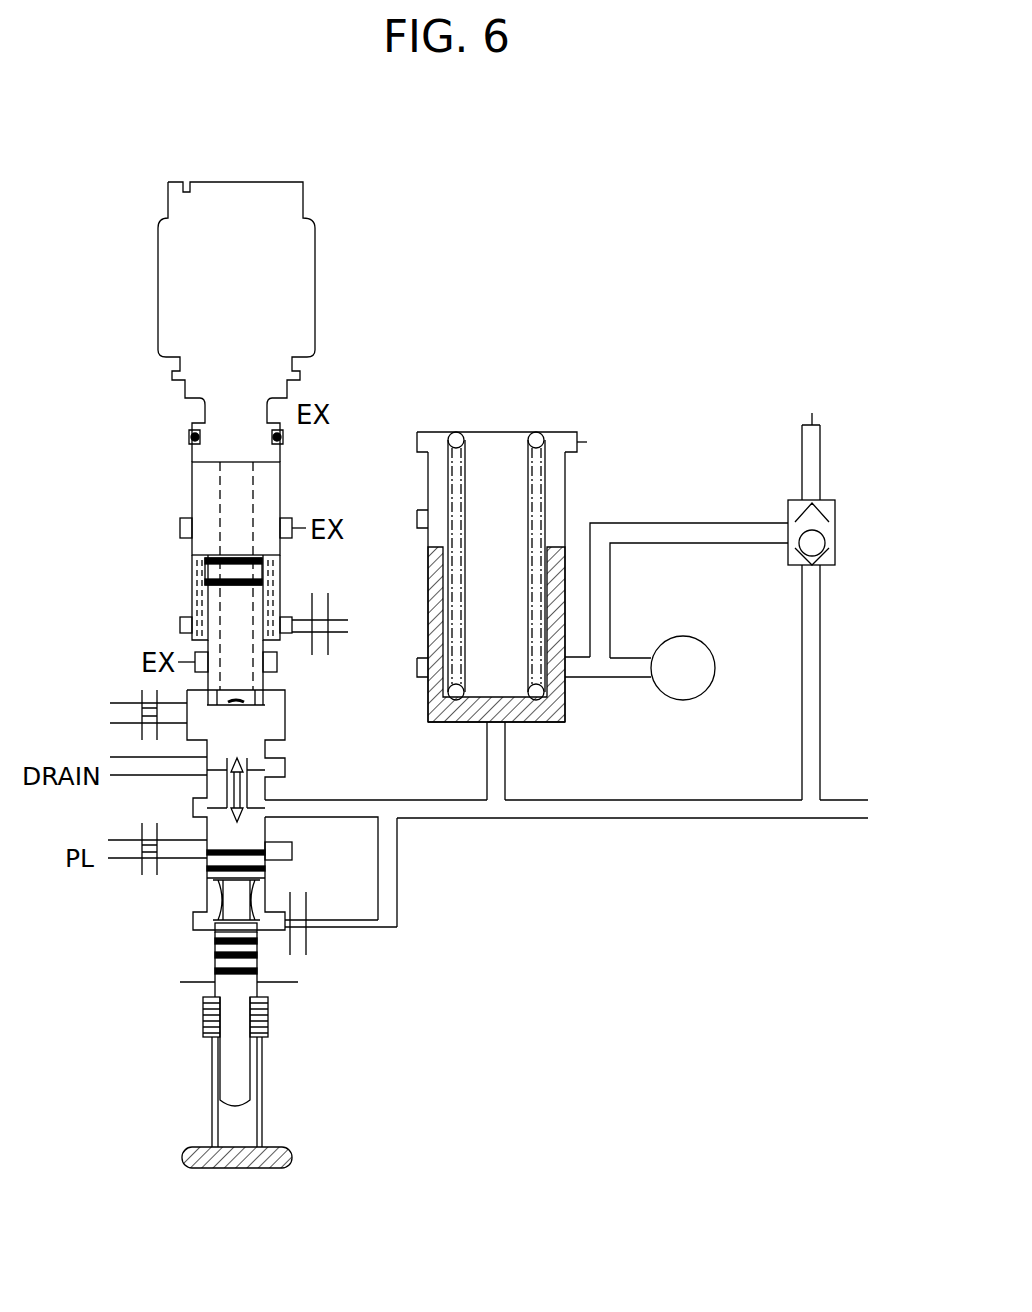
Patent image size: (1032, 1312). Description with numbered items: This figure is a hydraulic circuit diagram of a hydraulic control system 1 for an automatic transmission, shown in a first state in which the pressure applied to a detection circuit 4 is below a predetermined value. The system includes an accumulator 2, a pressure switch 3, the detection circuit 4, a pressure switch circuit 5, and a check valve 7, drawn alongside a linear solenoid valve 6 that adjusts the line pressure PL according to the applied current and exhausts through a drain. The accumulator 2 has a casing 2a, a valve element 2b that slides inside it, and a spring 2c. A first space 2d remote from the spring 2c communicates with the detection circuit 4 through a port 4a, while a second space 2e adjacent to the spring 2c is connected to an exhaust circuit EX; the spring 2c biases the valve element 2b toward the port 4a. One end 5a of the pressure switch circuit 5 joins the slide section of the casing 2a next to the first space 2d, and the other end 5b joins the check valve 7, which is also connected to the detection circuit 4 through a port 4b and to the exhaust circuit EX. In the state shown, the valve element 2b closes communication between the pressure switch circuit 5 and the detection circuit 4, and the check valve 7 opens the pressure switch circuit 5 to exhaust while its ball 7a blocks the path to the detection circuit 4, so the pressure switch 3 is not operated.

The hydraulic control system 1 is at (562, 151).
The accumulator 2 is at (499, 430).
The casing 2a is at (428, 470).
The valve element 2b is at (433, 703).
The spring 2c is at (565, 470).
The first space 2d is at (437, 728).
The second space 2e is at (472, 442).
The pressure switch 3 is at (715, 667).
The detection circuit 4 is at (664, 822).
The port 4a is at (507, 772).
The port 4b is at (822, 692).
The pressure switch circuit 5 is at (614, 595).
The one end of pressure switch circuit 5a is at (575, 677).
The other end of pressure switch circuit 5b is at (787, 522).
The linear solenoid valve 6 is at (152, 276).
The check valve 7 is at (840, 531).
The ball 7a is at (824, 546).